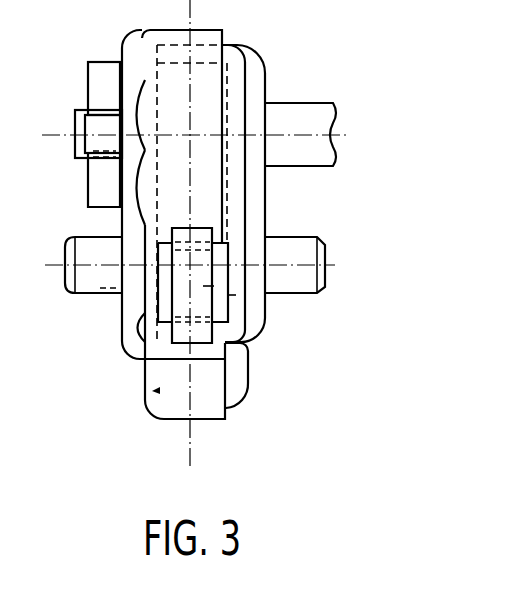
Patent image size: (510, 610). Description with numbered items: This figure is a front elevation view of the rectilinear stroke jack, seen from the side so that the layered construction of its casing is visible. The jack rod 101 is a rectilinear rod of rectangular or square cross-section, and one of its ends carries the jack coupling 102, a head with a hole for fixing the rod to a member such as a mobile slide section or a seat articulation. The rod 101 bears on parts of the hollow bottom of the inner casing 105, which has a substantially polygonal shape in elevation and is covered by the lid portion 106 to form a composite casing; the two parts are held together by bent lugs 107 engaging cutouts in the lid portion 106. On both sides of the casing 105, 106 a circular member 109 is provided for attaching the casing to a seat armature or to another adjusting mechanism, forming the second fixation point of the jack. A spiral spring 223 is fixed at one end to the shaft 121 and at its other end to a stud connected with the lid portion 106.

The jack rod 101 is at (112, 328).
The jack coupling 102 is at (290, 325).
The inner casing 105 is at (262, 396).
The lid portion 106 is at (128, 408).
The bent lugs 107 is at (108, 371).
The circular member 109 is at (301, 240).
The shaft 121 is at (298, 68).
The spiral spring 223 is at (100, 62).